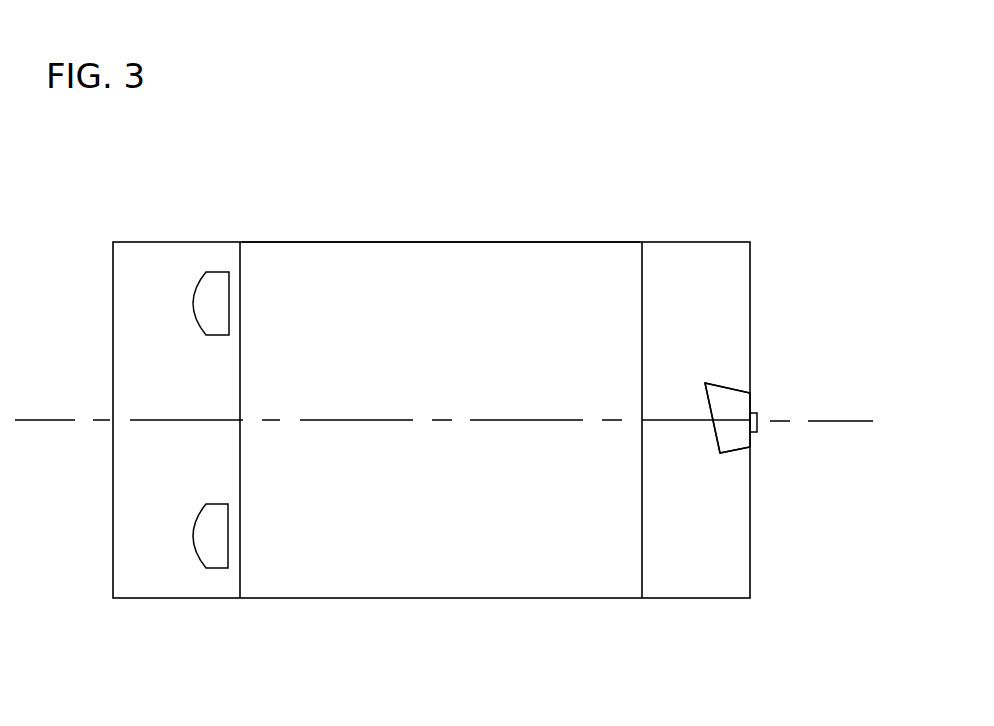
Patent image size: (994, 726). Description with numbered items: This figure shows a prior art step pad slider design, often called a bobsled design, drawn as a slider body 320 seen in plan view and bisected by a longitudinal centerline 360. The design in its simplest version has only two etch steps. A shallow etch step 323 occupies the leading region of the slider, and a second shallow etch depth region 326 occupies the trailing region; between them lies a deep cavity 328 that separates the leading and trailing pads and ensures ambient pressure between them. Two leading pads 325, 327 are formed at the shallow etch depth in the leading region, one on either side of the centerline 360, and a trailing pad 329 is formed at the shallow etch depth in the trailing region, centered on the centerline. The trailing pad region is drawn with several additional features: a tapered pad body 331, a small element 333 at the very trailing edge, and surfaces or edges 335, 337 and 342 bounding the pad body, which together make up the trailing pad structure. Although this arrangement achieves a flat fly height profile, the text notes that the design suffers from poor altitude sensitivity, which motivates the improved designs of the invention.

The optical assembly 320 is at (702, 196).
The shallow etch step 323 is at (126, 298).
The leading pad 325 is at (215, 553).
The shallow etch depth 326 is at (727, 275).
The leading pad 327 is at (212, 287).
The deep cavity 328 is at (442, 258).
The trailing pad 329 is at (740, 438).
The reflector body 331 is at (705, 399).
The detector 333 is at (752, 403).
The support 335 is at (735, 452).
The reflective surface 337 is at (730, 388).
The aperture 342 is at (760, 432).
The optical axis 360 is at (52, 418).